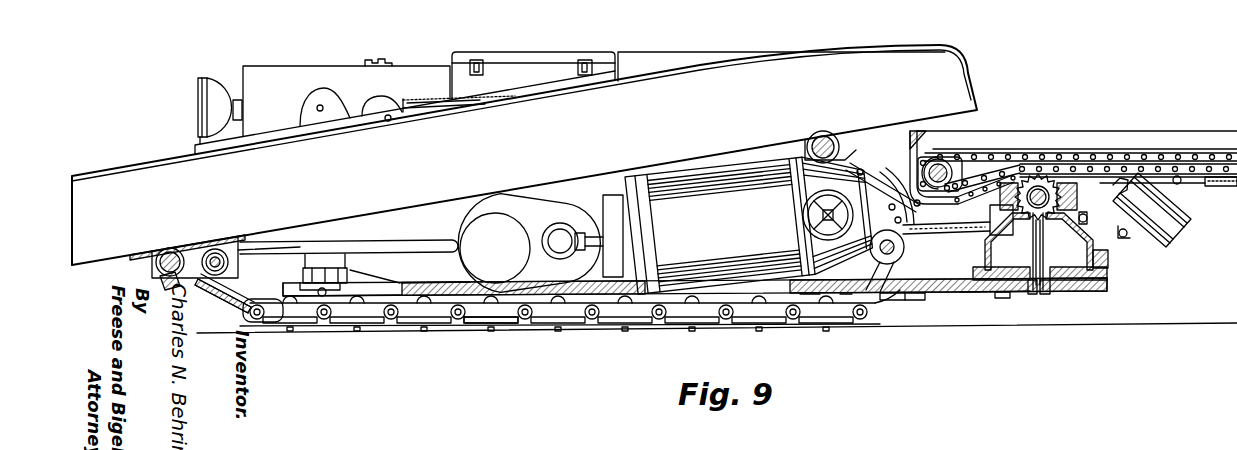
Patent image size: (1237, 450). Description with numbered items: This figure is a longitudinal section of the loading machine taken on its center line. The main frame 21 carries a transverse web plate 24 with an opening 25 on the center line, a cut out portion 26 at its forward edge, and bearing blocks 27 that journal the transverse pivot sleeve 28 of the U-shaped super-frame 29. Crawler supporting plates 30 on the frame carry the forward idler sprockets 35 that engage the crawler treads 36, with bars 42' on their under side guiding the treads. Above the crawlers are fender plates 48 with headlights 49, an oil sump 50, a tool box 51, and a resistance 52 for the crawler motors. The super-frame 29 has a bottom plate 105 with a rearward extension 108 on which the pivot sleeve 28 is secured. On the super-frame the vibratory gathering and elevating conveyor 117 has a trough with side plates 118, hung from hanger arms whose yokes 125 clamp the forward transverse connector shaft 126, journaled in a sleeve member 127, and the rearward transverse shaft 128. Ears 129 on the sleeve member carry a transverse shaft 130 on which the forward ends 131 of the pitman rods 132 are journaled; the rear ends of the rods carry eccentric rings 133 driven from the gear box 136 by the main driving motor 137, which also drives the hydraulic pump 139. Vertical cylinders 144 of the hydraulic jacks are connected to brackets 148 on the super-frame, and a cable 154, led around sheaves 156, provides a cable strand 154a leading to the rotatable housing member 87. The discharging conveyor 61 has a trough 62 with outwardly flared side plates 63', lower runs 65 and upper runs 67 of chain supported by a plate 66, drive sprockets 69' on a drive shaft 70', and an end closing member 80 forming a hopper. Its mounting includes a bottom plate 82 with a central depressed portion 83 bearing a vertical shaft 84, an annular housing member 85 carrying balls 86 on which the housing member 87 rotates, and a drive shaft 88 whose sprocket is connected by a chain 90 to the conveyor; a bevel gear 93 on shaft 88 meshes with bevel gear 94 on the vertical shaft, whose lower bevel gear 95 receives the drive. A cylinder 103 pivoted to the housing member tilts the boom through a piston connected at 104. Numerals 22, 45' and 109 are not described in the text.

The frame 21 is at (993, 293).
The crawler track 22 is at (587, 322).
The transverse web plate 24 is at (963, 293).
The opening 25 is at (1002, 298).
The cut out portion 26 is at (895, 300).
The bearing blocks 27 is at (917, 300).
The transverse pivot sleeve 28 is at (900, 300).
The U-shaped super-frame 29 is at (810, 294).
The crawler supporting plates 30 is at (347, 297).
The forward idler sprockets 35 is at (247, 326).
The crawler treads 36 is at (470, 323).
The bars 42' is at (543, 327).
The hand wheel 45' is at (851, 193).
The fender plates 48 is at (273, 134).
The headlights 49 is at (220, 85).
The oil sump 50 is at (290, 68).
The tool box 51 is at (528, 52).
The resistance 52 is at (707, 52).
The conveyor 61 is at (1150, 129).
The trough 62 is at (1117, 130).
The outwardly flared side plates 63' is at (1085, 117).
The lower runs 65 is at (1202, 181).
The plate 66 is at (1183, 165).
The upper runs 67 is at (1160, 152).
The drive sprockets 69' is at (979, 153).
The drive shaft 70' is at (961, 152).
The transverse end closing member portion 80 is at (914, 134).
The bottom plate 82 is at (1107, 286).
The central depressed portion 83 is at (1046, 290).
The vertical shaft 84 is at (1033, 290).
The annular housing member 85 is at (1096, 256).
The balls 86 is at (1086, 214).
The housing member 87 is at (1073, 207).
The drive shaft 88 is at (1040, 174).
The chain 90 is at (968, 200).
The bevel gear 93 is at (1041, 176).
The bevel gear 94 is at (1019, 240).
The bevel gear 95 is at (1052, 240).
The cylinder 103 is at (1165, 228).
The piston pivotal connection 104 is at (1179, 184).
The bottom plate 105 is at (427, 297).
The extension 108 is at (846, 294).
The lever 109 is at (900, 259).
The vibratory gathering and elevating conveyor 117 is at (658, 70).
The side plates 118 is at (524, 155).
The yokes 125 is at (180, 290).
The transverse connector shaft 126 is at (170, 248).
The sleeve member 127 is at (158, 264).
The transverse shaft 128 is at (824, 138).
The vertical flanges or ears 129 is at (202, 250).
The transverse shaft 130 is at (235, 243).
The forward ends 131 is at (255, 248).
The pitman or connecting rods 132 is at (364, 246).
The eccentric rings 133 is at (497, 213).
The gear box 136 is at (527, 200).
The main driving motor 137 is at (739, 222).
The hydraulic pump 139 is at (540, 256).
The cylinders 144 is at (315, 270).
The brackets 148 is at (300, 106).
The cable 154 is at (487, 98).
The cable strand 154a is at (905, 235).
The sheaves 156 is at (384, 100).